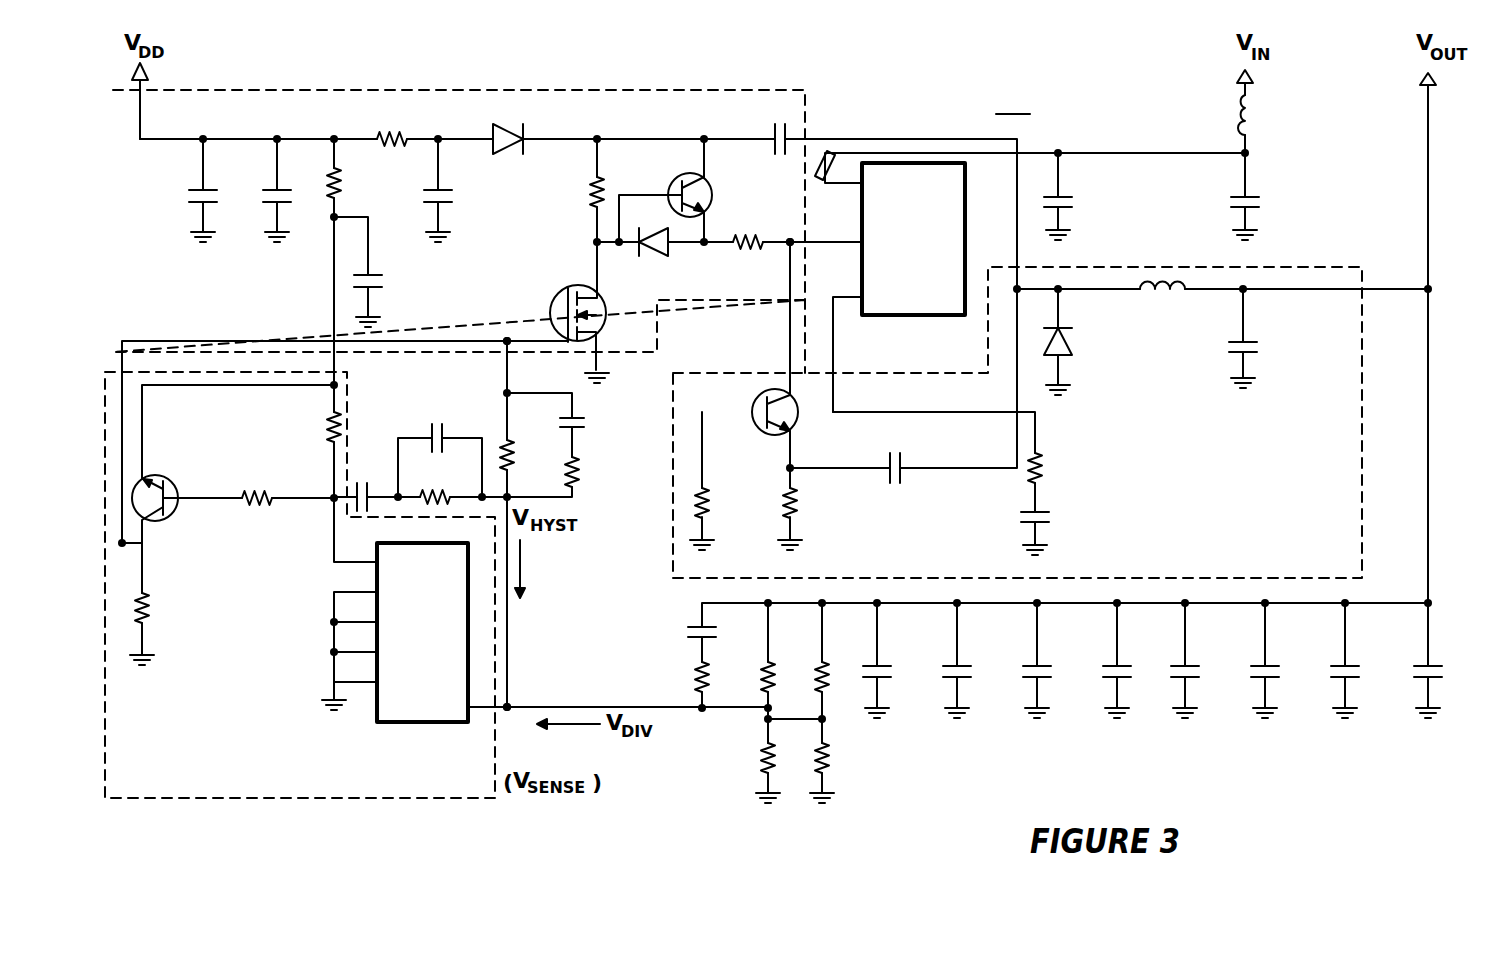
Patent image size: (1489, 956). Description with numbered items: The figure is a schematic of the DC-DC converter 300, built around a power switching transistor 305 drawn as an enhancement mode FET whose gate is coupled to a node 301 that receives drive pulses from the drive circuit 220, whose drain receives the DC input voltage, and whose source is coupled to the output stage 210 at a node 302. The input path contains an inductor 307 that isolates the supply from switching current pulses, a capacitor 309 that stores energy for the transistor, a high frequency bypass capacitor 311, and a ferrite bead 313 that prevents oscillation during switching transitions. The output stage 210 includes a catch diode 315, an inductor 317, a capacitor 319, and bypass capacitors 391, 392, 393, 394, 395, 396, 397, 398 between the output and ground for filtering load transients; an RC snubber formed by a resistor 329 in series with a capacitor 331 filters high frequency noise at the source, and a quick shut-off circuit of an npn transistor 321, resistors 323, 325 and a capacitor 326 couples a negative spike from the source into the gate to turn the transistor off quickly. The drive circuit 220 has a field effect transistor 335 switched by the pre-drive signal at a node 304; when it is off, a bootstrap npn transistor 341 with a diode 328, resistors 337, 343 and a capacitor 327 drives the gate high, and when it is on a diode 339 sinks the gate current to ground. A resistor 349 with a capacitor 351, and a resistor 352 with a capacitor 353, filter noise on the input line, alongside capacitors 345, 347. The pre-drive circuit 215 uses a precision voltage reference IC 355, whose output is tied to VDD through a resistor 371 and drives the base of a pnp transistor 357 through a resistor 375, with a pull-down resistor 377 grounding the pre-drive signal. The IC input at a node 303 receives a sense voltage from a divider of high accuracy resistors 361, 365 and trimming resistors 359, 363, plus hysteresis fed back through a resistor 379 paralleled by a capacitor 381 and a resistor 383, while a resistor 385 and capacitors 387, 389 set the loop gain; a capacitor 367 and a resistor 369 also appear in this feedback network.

The output stage 210 is at (1017, 422).
The pre-drive circuit 215 is at (300, 585).
The drive circuit 220 is at (459, 231).
The DC-DC converter 300 is at (1012, 88).
The node 301 is at (835, 248).
The node 302 is at (834, 359).
The node 303 is at (512, 704).
The node 304 is at (505, 338).
The power switching transistor 305 is at (967, 185).
The inductor 307 is at (1245, 110).
The capacitor 309 is at (1257, 195).
The capacitor 311 is at (1067, 197).
The ferrite bead 313 is at (812, 173).
The catch diode 315 is at (1072, 355).
The inductor 317 is at (1163, 294).
The capacitor 319 is at (1250, 339).
The npn transistor 321 is at (764, 388).
The resistor 323 is at (708, 493).
The resistor 325 is at (797, 513).
The capacitor 326 is at (903, 460).
The capacitor 327 is at (762, 131).
The diode 328 is at (500, 125).
The resistor 329 is at (1040, 458).
The capacitor 331 is at (1048, 510).
The transistor 335 is at (604, 320).
The resistor 337 is at (602, 187).
The diode 339 is at (658, 257).
The npn transistor 341 is at (712, 192).
The resistor 343 is at (753, 237).
The capacitor 345 is at (210, 190).
The capacitor 347 is at (285, 190).
The resistor 349 is at (398, 134).
The capacitor 351 is at (445, 190).
The resistor 352 is at (344, 185).
The capacitor 353 is at (375, 275).
The precision voltage reference IC 355 is at (433, 544).
The pnp transistor 357 is at (156, 478).
The resistor 359 is at (829, 670).
The resistor 361 is at (775, 670).
The resistor 363 is at (828, 766).
The resistor 365 is at (775, 757).
The capacitor 367 is at (688, 624).
The resistor 369 is at (710, 667).
The resistor 371 is at (342, 417).
The resistor 375 is at (253, 491).
The pull-down resistor 377 is at (145, 600).
The resistor 379 is at (512, 443).
The capacitor 381 is at (586, 425).
The resistor 383 is at (577, 470).
The resistor 385 is at (433, 492).
The capacitor 387 is at (441, 423).
The capacitor 389 is at (358, 482).
The bypass capacitor 391 is at (890, 664).
The bypass capacitor 392 is at (968, 664).
The bypass capacitor 393 is at (1048, 664).
The bypass capacitor 394 is at (1128, 664).
The bypass capacitor 395 is at (1198, 664).
The bypass capacitor 396 is at (1277, 664).
The bypass capacitor 397 is at (1357, 664).
The bypass capacitor 398 is at (1437, 664).